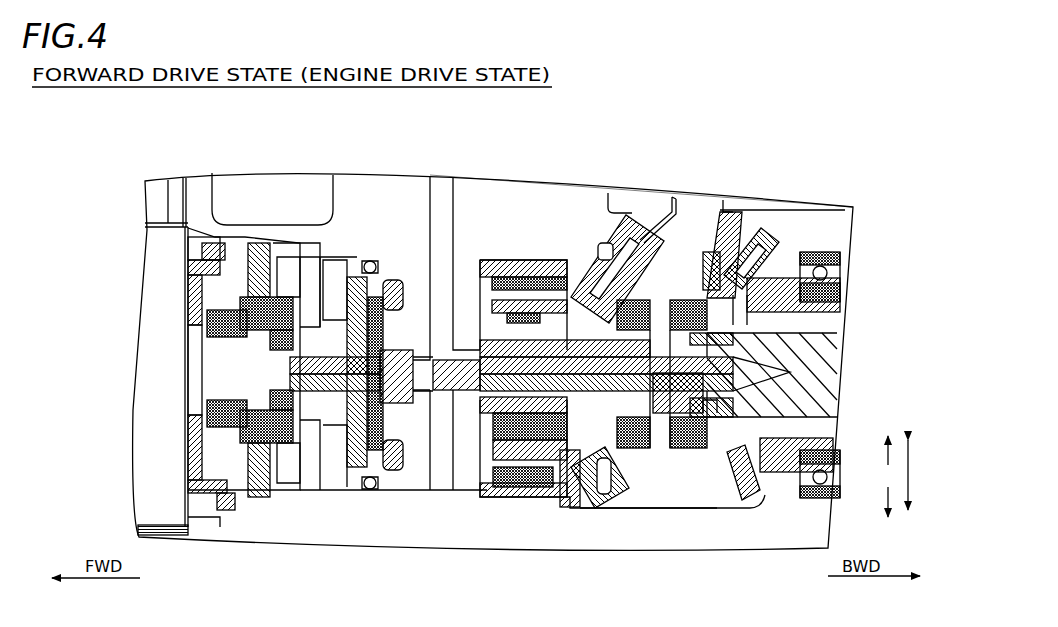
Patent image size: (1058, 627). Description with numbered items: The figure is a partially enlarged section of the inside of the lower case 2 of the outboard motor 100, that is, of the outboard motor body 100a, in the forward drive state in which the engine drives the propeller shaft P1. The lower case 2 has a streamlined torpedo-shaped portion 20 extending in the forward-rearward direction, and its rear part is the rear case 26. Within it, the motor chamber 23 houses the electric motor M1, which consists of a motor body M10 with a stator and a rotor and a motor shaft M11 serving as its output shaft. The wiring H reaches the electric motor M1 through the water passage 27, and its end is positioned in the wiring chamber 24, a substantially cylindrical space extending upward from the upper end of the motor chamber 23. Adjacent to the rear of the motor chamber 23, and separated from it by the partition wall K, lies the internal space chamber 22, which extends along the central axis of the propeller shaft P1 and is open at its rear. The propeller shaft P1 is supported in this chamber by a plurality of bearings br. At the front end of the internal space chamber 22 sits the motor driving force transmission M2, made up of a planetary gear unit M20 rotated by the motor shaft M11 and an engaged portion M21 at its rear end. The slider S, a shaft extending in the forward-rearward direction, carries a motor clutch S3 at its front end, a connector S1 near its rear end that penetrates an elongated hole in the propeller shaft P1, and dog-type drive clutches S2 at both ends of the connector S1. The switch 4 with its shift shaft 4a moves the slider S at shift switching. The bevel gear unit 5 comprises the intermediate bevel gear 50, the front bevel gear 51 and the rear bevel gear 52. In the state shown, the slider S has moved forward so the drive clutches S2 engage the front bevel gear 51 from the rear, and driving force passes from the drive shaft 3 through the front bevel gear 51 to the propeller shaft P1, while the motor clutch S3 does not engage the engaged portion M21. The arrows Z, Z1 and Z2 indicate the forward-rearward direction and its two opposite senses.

The outboard motor 100 is at (864, 161).
The outboard motor body 100a is at (858, 216).
The lower case 2 is at (858, 247).
The drive shaft 3 is at (711, 208).
The switch 4 is at (432, 176).
The shift shaft 4a is at (450, 182).
The bevel gear unit 5 is at (735, 212).
The torpedo-shaped portion 20 is at (220, 527).
The internal space chamber 22 is at (732, 500).
The motor chamber 23 is at (158, 524).
The wiring chamber 24 is at (168, 214).
The rear case 26 is at (518, 160).
The water passage 27 is at (318, 182).
The intermediate bevel gear 50 is at (750, 226).
The front bevel gear 51 is at (592, 255).
The rear bevel gear 52 is at (770, 248).
The wiring H is at (148, 211).
The partition wall K is at (203, 493).
The electric motor M1 is at (80, 350).
The motor body M10 is at (158, 390).
The motor shaft M11 is at (185, 372).
The motor driving force transmission M2 is at (395, 572).
The planetary gear unit M20 is at (311, 503).
The engaged portion M21 is at (405, 480).
The propeller shaft P1 is at (834, 362).
The slider S is at (695, 455).
The connector S1 is at (661, 452).
The drive clutches S2 is at (637, 450).
The motor clutch S3 is at (392, 428).
The bearings br is at (505, 498).
The axial direction Z is at (893, 476).
The first axial side Z1 is at (870, 452).
The second axial side Z2 is at (870, 500).